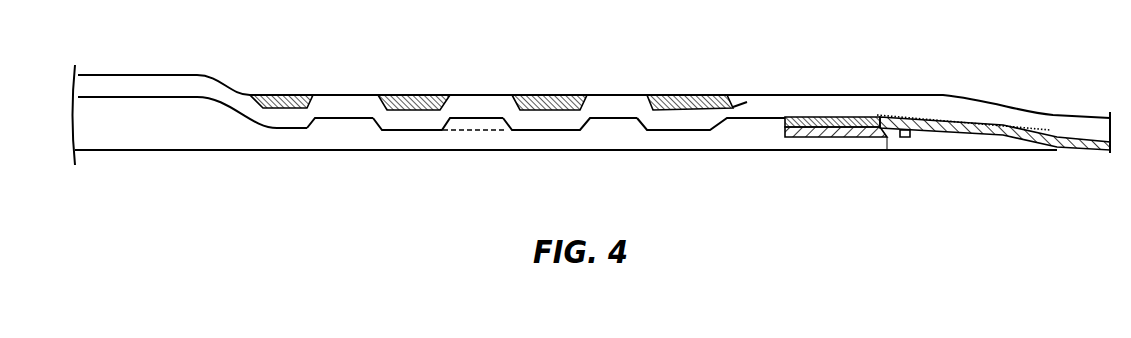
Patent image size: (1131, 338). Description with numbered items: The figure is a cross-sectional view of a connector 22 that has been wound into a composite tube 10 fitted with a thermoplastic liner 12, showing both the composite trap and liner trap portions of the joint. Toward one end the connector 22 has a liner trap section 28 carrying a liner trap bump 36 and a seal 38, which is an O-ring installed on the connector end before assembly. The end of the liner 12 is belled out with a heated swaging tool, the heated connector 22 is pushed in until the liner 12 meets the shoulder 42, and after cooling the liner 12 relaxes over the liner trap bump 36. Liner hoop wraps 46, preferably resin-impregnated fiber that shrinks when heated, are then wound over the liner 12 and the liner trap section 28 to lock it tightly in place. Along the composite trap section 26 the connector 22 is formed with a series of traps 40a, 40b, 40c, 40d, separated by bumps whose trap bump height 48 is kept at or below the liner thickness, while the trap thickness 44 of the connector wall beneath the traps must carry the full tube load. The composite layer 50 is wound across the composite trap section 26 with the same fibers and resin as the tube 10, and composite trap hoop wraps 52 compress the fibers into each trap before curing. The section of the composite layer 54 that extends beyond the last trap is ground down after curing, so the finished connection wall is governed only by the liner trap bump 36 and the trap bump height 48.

The composite tube 10 is at (1030, 110).
The thermoplastic liner 12 is at (1007, 132).
The connector 22 is at (113, 102).
The composite trap section 26 is at (612, 132).
The liner trap section 28 is at (862, 130).
The liner trap bump 36 is at (890, 143).
The seal 38 is at (904, 140).
The trap 40a is at (660, 133).
The trap 40b is at (555, 130).
The trap 40c is at (420, 130).
The trap 40d is at (277, 127).
The shoulder 42 is at (758, 138).
The trap thickness 44 is at (457, 132).
The liner hoop wraps 46 is at (800, 118).
The trap bump height 48 is at (475, 125).
The composite layer 50 is at (942, 105).
The composite trap hoop wraps 52 is at (425, 97).
The section of the composite layer 54 is at (183, 78).